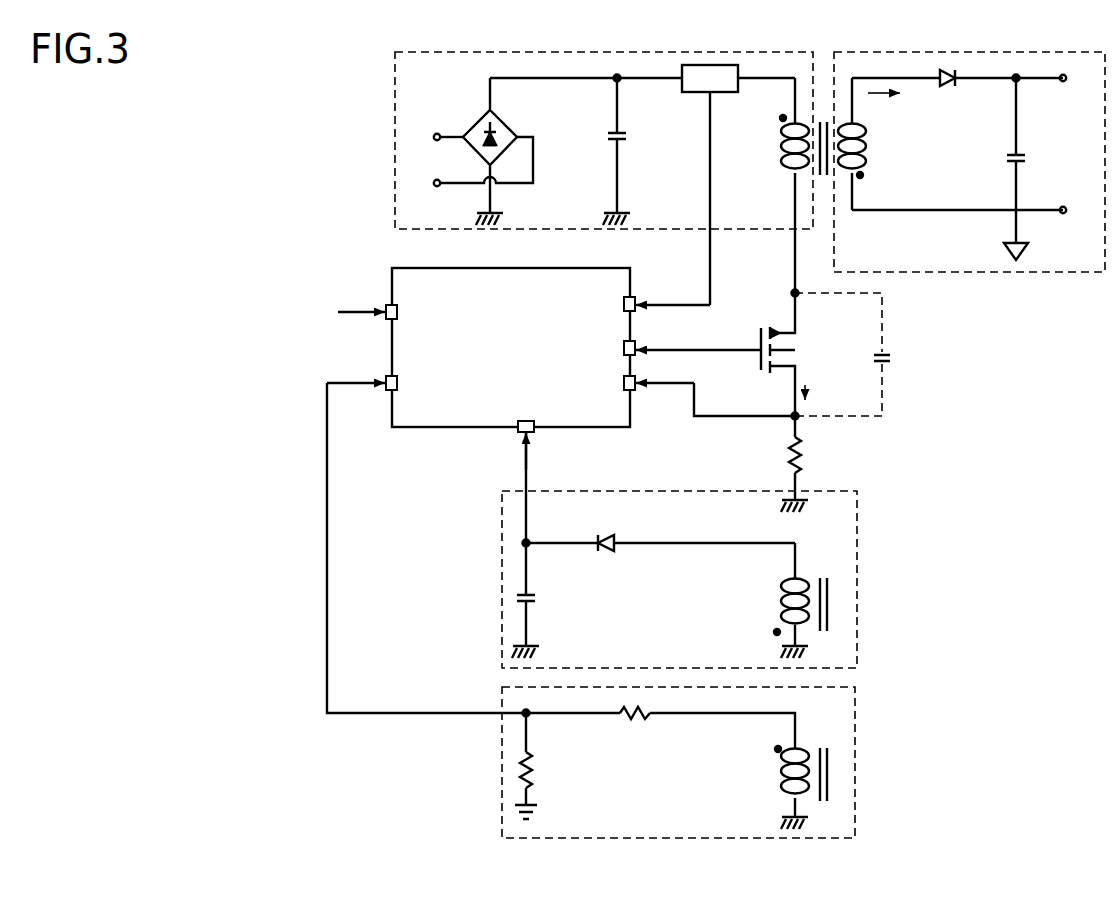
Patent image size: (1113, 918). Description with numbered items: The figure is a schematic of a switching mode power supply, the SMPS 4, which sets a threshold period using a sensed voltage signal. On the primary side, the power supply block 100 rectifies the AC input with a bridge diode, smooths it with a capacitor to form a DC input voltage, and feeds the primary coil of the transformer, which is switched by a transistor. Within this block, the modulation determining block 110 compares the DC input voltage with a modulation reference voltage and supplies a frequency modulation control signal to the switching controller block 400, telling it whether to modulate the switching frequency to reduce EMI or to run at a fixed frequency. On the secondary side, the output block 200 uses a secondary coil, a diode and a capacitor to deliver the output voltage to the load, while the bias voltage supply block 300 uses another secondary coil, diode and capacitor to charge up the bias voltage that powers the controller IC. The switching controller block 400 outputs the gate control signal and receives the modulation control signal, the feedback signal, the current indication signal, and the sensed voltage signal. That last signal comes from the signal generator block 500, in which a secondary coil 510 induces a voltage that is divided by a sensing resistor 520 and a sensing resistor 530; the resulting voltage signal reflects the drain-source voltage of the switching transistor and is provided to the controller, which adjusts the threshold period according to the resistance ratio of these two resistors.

The SMPS 4 is at (322, 66).
The power supply block 100 is at (395, 132).
The modulation determining block 110 is at (725, 65).
The output block 200 is at (1065, 272).
The bias voltage supply block 300 is at (857, 546).
The switching controller block 400 is at (392, 270).
The signal generator block 500 is at (857, 743).
The secondary coil 510 is at (772, 797).
The sensing resistor 520 is at (658, 704).
The sensing resistor 530 is at (512, 769).